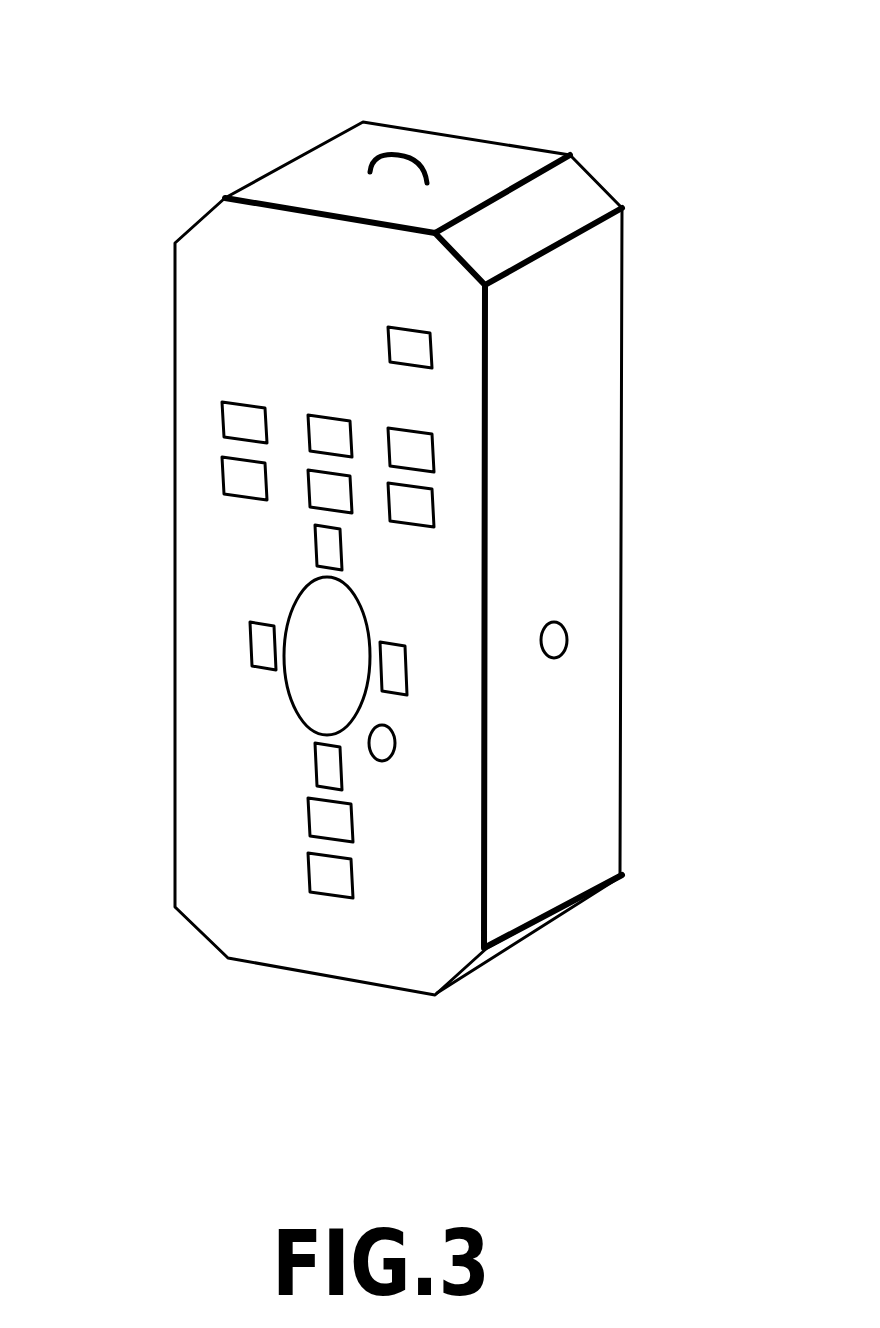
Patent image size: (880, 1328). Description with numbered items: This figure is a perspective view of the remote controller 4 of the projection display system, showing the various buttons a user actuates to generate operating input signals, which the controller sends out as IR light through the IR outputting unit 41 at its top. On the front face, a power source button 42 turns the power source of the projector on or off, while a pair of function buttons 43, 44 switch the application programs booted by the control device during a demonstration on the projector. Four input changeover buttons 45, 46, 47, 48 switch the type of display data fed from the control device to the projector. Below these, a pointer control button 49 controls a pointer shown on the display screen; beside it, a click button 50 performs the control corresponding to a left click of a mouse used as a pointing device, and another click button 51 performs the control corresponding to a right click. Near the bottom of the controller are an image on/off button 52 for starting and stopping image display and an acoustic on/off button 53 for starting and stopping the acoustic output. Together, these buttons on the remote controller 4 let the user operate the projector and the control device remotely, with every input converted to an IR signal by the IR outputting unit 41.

The remote controller 4 is at (83, 33).
The IR outputting unit 41 is at (398, 155).
The power source button 42 is at (417, 355).
The function button 43 is at (238, 400).
The function button 44 is at (320, 413).
The input changeover button 45 is at (418, 450).
The input changeover button 46 is at (418, 505).
The input changeover button 47 is at (317, 510).
The input changeover button 48 is at (242, 493).
The pointer control button 49 is at (303, 680).
The click button 50 is at (556, 622).
The click button 51 is at (384, 762).
The image on/off button 52 is at (308, 815).
The acoustic on/off button 53 is at (308, 877).